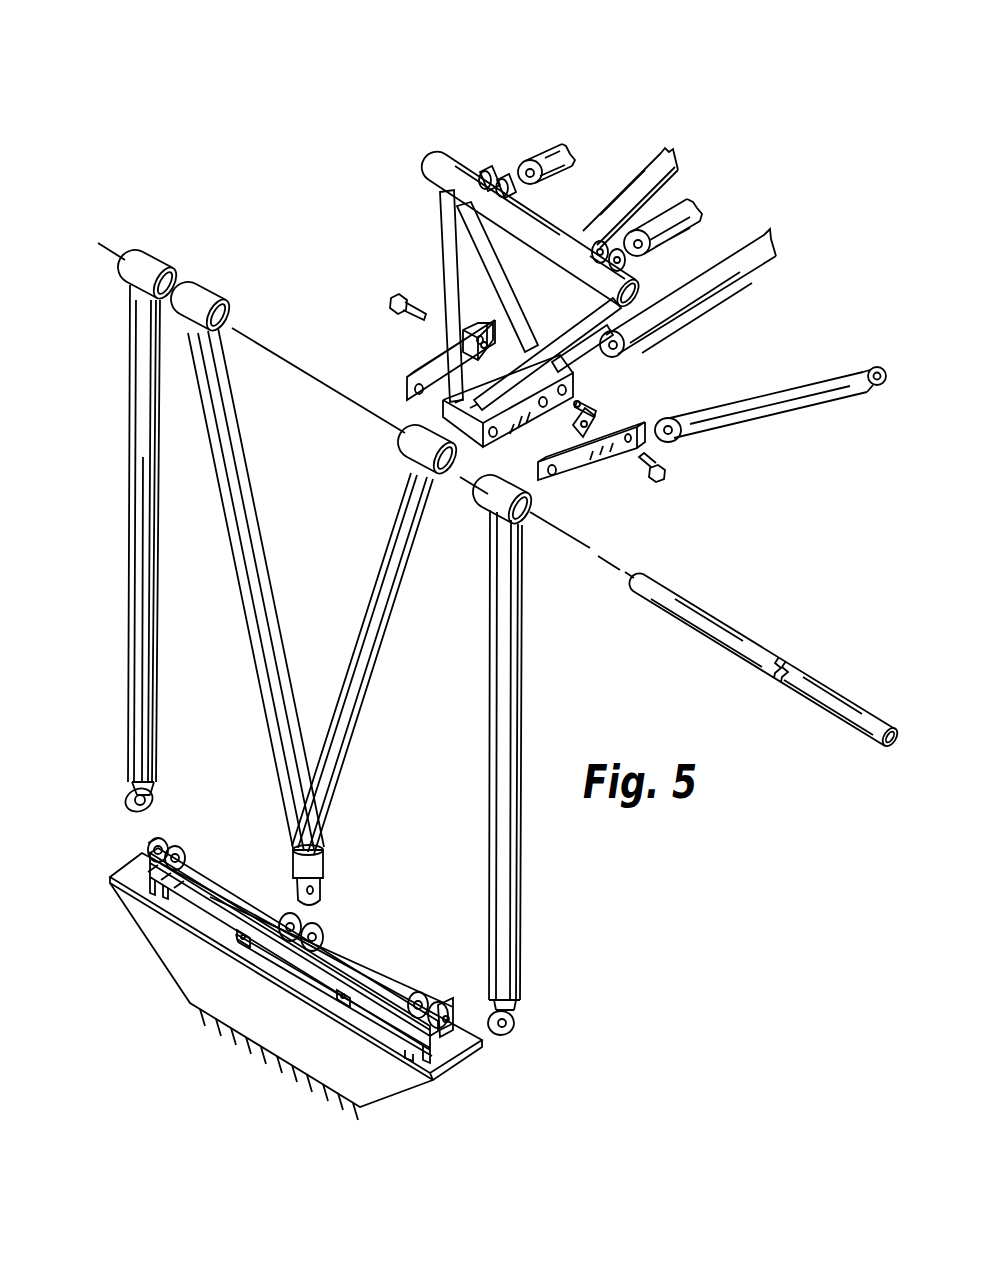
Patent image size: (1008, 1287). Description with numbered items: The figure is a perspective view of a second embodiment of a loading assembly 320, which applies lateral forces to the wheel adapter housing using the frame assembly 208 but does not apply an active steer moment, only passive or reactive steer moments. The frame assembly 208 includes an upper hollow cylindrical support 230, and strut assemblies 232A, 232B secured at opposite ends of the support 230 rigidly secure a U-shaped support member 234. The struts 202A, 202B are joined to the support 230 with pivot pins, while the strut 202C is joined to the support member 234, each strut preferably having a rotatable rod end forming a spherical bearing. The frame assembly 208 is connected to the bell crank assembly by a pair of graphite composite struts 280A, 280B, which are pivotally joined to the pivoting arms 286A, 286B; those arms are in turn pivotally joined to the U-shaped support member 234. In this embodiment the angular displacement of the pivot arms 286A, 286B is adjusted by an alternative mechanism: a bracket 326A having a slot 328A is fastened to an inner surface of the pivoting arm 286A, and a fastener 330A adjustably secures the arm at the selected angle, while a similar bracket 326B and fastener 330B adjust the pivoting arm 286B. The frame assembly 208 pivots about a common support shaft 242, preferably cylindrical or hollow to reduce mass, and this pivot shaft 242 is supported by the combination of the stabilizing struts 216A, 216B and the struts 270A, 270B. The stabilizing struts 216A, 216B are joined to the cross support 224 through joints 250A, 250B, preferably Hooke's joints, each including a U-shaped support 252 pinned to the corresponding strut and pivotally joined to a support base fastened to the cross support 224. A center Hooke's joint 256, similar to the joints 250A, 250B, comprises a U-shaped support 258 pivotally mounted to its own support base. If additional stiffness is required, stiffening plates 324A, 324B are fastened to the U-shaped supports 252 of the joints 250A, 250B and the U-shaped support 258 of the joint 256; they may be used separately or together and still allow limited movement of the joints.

The loading assembly 320 is at (262, 172).
The frame assembly 208 is at (463, 143).
The upper hollow cylindrical support 230 is at (508, 208).
The strut assembly 232A is at (436, 213).
The strut assembly 232B is at (597, 356).
The U-shaped support member 234 is at (408, 418).
The bracket 326B is at (478, 320).
The fastener 330B is at (398, 295).
The pivoting arm 286B is at (438, 355).
The strut 202B is at (543, 152).
The graphite composite strut 280B is at (650, 178).
The strut 202A is at (680, 205).
The strut 202C is at (727, 267).
The graphite composite strut 280A is at (818, 388).
The pivoting arm 286A is at (615, 467).
The slot 328A is at (570, 438).
The bracket 326A is at (620, 412).
The fastener 330A is at (663, 470).
The support shaft 242 is at (683, 597).
The stabilizing strut 216A is at (142, 393).
The stabilizing strut 216B is at (507, 611).
The strut 270A is at (232, 500).
The strut 270B is at (360, 663).
The cross support 224 is at (467, 1060).
The stiffening plate 324A is at (210, 897).
The stiffening plate 324B is at (185, 858).
The center Hooke's joint 256 is at (378, 958).
The joint 250A is at (167, 827).
The joint 250B is at (445, 1000).
The U-shaped support 258 is at (320, 930).
The U-shaped support 252 is at (153, 845).